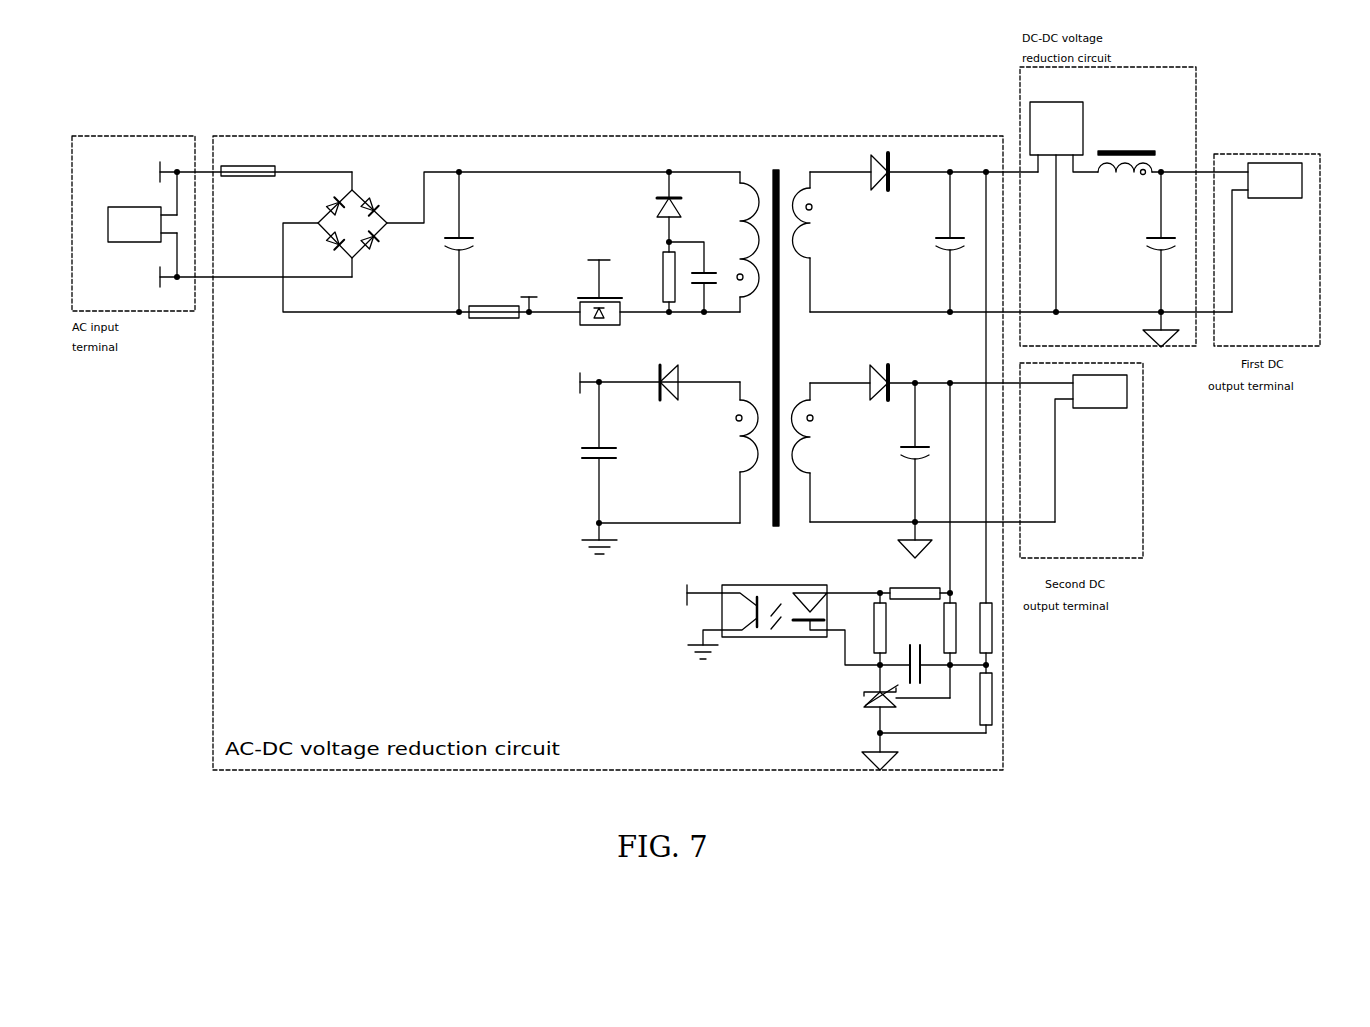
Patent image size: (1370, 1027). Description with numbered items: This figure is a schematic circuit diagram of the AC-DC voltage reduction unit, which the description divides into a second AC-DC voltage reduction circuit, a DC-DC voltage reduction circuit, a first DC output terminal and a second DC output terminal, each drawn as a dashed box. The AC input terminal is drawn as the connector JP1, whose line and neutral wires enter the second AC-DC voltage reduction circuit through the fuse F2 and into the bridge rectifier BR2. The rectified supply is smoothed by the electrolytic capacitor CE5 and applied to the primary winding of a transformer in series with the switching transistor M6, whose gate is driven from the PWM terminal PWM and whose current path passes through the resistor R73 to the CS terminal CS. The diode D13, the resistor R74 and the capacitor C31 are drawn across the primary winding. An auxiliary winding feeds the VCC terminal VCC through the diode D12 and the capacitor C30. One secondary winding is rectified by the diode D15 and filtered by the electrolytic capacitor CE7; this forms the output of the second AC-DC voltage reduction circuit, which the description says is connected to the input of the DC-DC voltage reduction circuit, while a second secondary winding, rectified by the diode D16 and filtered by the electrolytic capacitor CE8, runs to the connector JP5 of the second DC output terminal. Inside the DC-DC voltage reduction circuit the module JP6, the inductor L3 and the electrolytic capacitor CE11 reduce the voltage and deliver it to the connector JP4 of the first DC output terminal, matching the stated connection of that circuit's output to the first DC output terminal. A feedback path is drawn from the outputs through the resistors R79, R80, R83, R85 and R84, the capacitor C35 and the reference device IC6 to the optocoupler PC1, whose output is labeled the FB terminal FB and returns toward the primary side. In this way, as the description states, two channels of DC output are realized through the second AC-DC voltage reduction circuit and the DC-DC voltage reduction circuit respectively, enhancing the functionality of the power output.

The AC input connector JP1 is at (143, 224).
The fuse F2 is at (248, 164).
The bridge rectifier BR2 is at (352, 224).
The electrolytic capacitor CE5 is at (459, 242).
The resistor R73 is at (494, 305).
The current sense terminal CS is at (529, 299).
The PWM control terminal PWM is at (598, 272).
The MOSFET switch M6 is at (600, 322).
The diode D13 is at (683, 207).
The resistor R74 is at (662, 278).
The capacitor C31 is at (697, 278).
The VCC supply terminal VCC is at (572, 383).
The diode D12 is at (666, 375).
The capacitor C30 is at (599, 466).
The rectifier diode D15 is at (895, 171).
The electrolytic capacitor CE7 is at (950, 242).
The rectifier diode D16 is at (879, 374).
The electrolytic capacitor CE8 is at (915, 469).
The DC-DC regulator module JP6 is at (1067, 208).
The inductor L3 is at (1173, 156).
The electrolytic capacitor CE11 is at (1161, 258).
The first DC output connector JP4 is at (1267, 237).
The second DC output connector JP5 is at (1091, 448).
The optocoupler PC1 is at (799, 618).
The feedback terminal FB is at (693, 595).
The resistor R79 is at (915, 587).
The resistor R80 is at (873, 630).
The resistor R83 is at (943, 650).
The resistor R85 is at (979, 638).
The capacitor C35 is at (942, 657).
The resistor R84 is at (936, 703).
The voltage reference IC IC6 is at (906, 717).